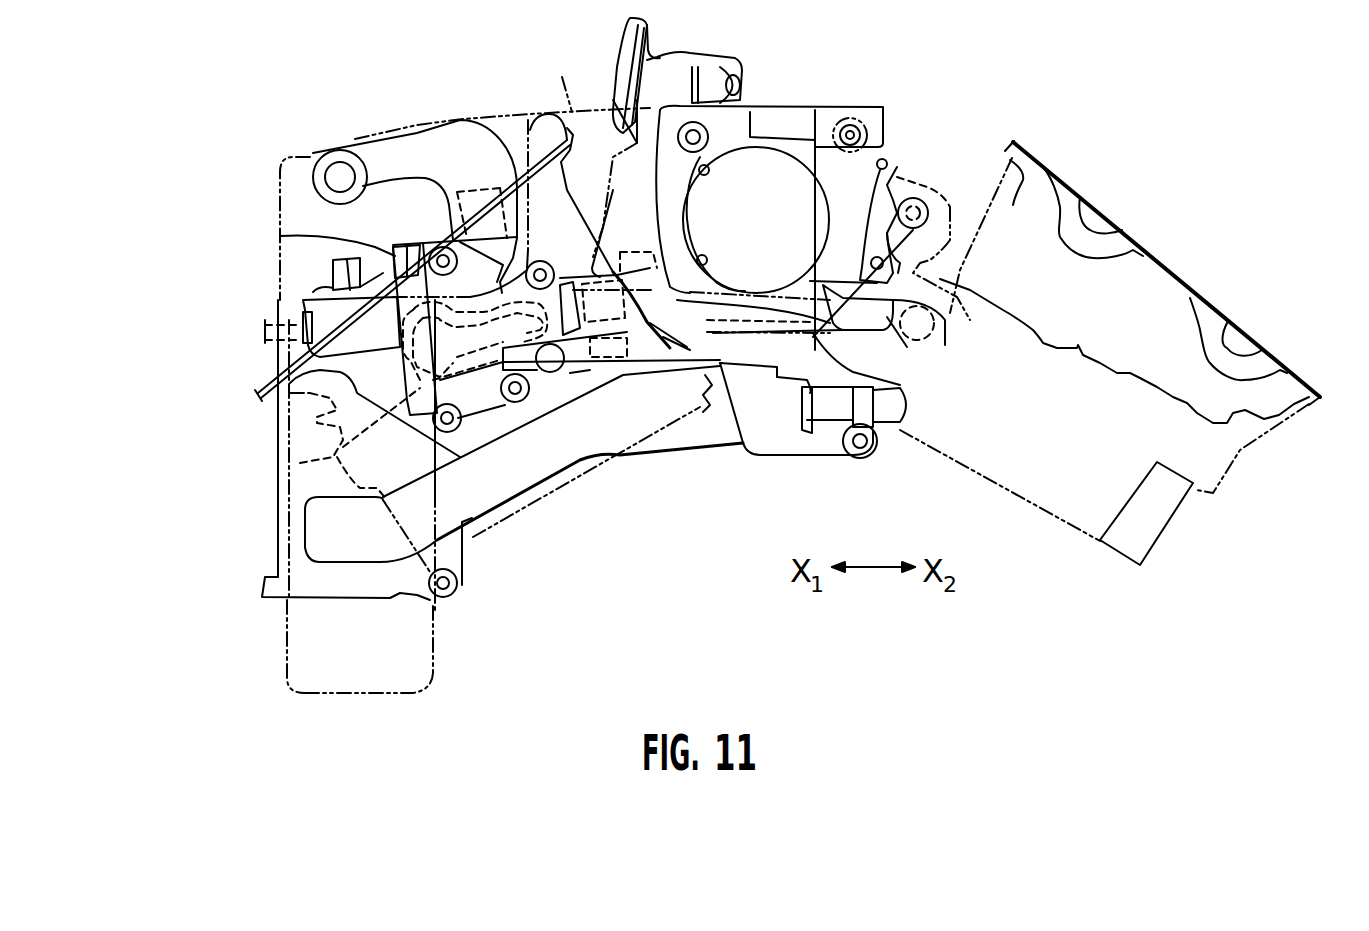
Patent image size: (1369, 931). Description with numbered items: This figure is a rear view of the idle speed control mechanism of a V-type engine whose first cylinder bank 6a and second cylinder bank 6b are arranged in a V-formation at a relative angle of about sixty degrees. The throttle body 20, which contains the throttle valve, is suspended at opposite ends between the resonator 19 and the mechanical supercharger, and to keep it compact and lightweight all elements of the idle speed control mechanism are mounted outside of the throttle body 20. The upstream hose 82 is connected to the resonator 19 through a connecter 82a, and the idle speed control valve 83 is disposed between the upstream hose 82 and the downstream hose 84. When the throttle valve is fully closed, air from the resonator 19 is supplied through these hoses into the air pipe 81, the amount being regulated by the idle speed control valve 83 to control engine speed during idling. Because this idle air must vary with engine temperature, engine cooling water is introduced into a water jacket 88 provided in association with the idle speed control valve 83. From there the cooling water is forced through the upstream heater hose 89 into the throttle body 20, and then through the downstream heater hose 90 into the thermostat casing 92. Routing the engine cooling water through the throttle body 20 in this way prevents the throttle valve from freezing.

The first cylinder bank 6a is at (474, 318).
The second cylinder bank 6b is at (1170, 527).
The resonator 19 is at (436, 660).
The throttle body 20 is at (707, 55).
The air pipe 81 is at (890, 107).
The upstream hose 82 is at (397, 123).
The connecter 82a is at (327, 181).
The idle speed control valve 83 is at (280, 236).
The downstream hose 84 is at (703, 373).
The water jacket 88 is at (300, 463).
The upstream heater hose 89 is at (632, 373).
The downstream heater hose 90 is at (853, 307).
The thermostat casing 92 is at (537, 487).